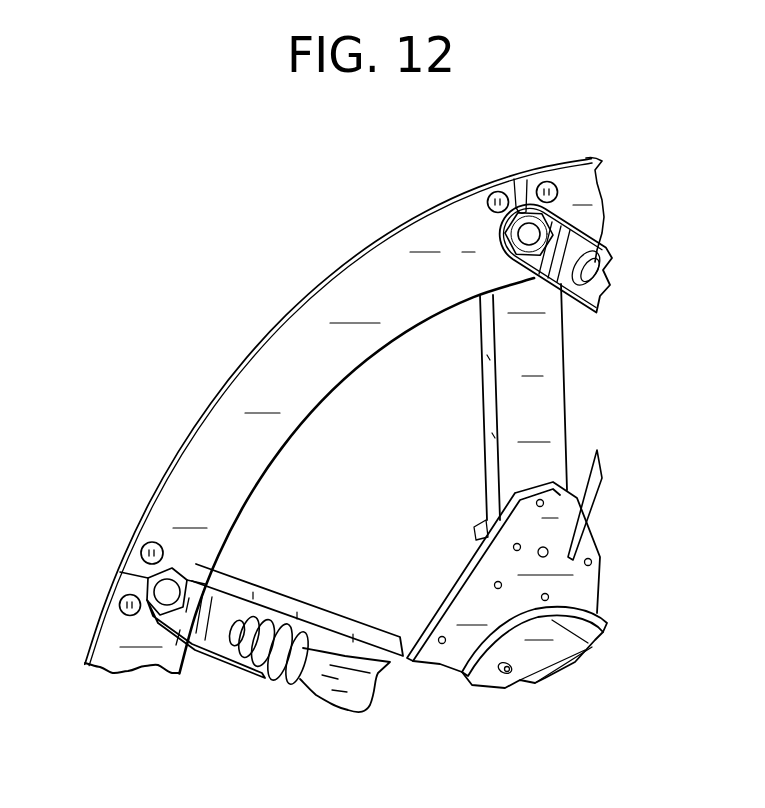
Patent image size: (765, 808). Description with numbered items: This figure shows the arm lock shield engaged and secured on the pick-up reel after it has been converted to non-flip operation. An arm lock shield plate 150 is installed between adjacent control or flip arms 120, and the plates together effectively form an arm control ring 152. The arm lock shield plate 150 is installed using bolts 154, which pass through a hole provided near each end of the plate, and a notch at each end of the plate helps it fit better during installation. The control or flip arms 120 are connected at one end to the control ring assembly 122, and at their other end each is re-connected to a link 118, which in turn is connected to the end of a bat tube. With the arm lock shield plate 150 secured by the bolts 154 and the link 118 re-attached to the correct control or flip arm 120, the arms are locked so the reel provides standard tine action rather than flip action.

The link member 118 is at (220, 607).
The control or flip arm 120 is at (503, 409).
The control ring assembly 122 is at (465, 593).
The arm lock shield plate 150 is at (298, 330).
The arm control ring 152 is at (389, 205).
The bolt 154 is at (550, 182).